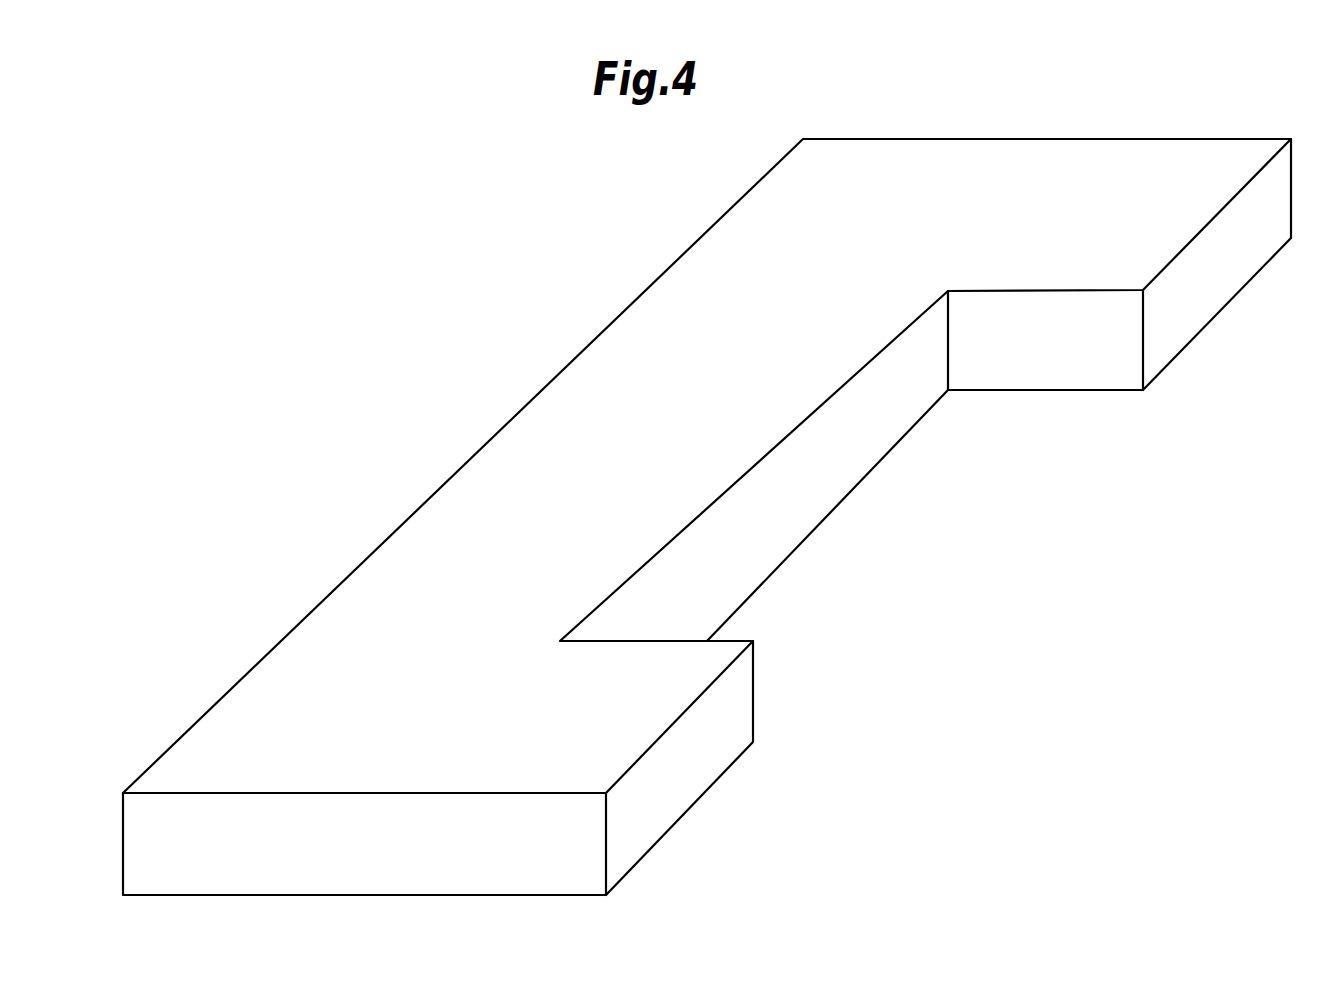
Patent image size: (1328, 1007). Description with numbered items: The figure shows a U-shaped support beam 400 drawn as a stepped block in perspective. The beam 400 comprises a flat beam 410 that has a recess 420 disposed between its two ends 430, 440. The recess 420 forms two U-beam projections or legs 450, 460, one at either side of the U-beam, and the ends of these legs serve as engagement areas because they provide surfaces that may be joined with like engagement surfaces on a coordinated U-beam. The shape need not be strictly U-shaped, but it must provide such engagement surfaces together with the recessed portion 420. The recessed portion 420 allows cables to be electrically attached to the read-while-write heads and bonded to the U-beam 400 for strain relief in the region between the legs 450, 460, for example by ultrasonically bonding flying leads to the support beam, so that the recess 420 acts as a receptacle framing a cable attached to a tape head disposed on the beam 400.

The U-shaped support beam 400 is at (487, 290).
The flat beam 410 is at (340, 630).
The recess 420 is at (827, 463).
The end 430 is at (353, 856).
The end 440 is at (975, 139).
The leg 450 is at (1087, 335).
The leg 460 is at (632, 717).